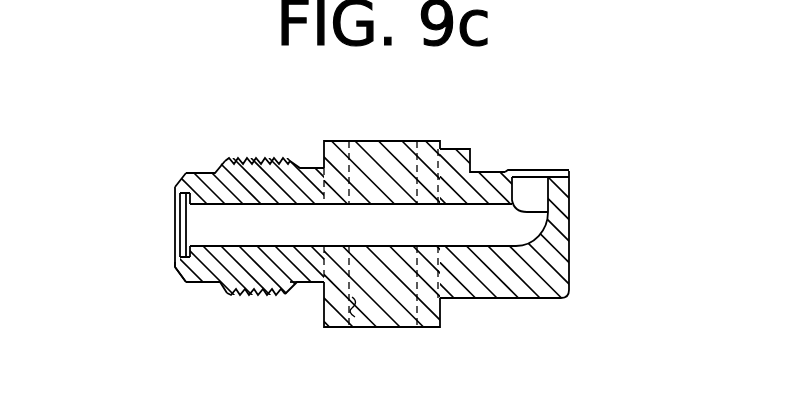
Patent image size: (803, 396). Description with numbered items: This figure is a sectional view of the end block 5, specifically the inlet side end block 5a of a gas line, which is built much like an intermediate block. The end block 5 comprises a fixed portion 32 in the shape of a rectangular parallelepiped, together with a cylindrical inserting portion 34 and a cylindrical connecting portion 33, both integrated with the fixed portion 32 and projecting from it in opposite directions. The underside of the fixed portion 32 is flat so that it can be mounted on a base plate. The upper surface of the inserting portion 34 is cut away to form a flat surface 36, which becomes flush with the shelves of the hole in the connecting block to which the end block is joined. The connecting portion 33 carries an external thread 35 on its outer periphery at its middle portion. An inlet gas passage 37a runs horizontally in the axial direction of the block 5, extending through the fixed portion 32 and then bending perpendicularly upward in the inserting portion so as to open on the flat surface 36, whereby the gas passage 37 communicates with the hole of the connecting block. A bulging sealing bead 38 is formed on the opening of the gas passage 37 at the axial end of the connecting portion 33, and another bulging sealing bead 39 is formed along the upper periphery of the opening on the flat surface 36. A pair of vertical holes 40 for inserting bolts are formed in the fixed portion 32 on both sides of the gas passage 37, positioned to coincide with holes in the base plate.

The end block 5 is at (317, 122).
The inlet side end block 5a is at (300, 283).
The fixed portion 32 is at (403, 137).
The connecting portion 33 is at (211, 165).
The inserting portion 34 is at (543, 302).
The external thread 35 is at (268, 158).
The flat surface 36 is at (483, 172).
The gas passage 37 is at (480, 238).
The inlet gas passage 37a is at (208, 231).
The sealing bead 38 is at (184, 266).
The sealing bead 39 is at (552, 171).
The vertical holes 40 is at (357, 326).